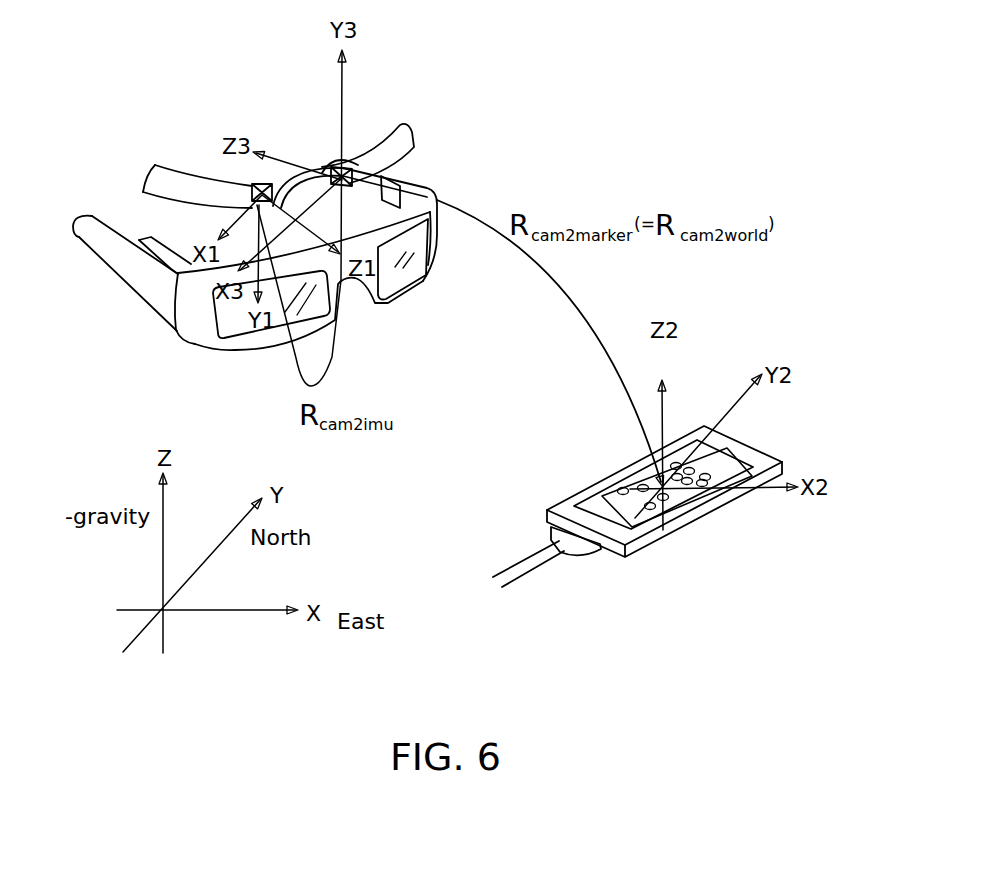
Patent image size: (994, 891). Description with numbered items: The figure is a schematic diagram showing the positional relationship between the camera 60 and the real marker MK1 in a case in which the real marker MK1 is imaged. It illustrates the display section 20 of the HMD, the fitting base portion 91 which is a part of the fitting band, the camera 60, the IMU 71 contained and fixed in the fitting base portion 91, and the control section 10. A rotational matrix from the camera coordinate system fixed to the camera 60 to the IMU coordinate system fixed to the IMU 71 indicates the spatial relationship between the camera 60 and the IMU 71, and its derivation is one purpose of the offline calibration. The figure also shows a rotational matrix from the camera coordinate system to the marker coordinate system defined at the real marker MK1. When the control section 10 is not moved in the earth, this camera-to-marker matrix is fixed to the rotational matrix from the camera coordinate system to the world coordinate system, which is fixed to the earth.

The display section 20 is at (440, 193).
The camera 60 is at (329, 166).
The IMU 71 is at (254, 186).
The fitting base portion 91 is at (413, 135).
The control section 10 is at (551, 509).
The real marker MK1 is at (610, 489).